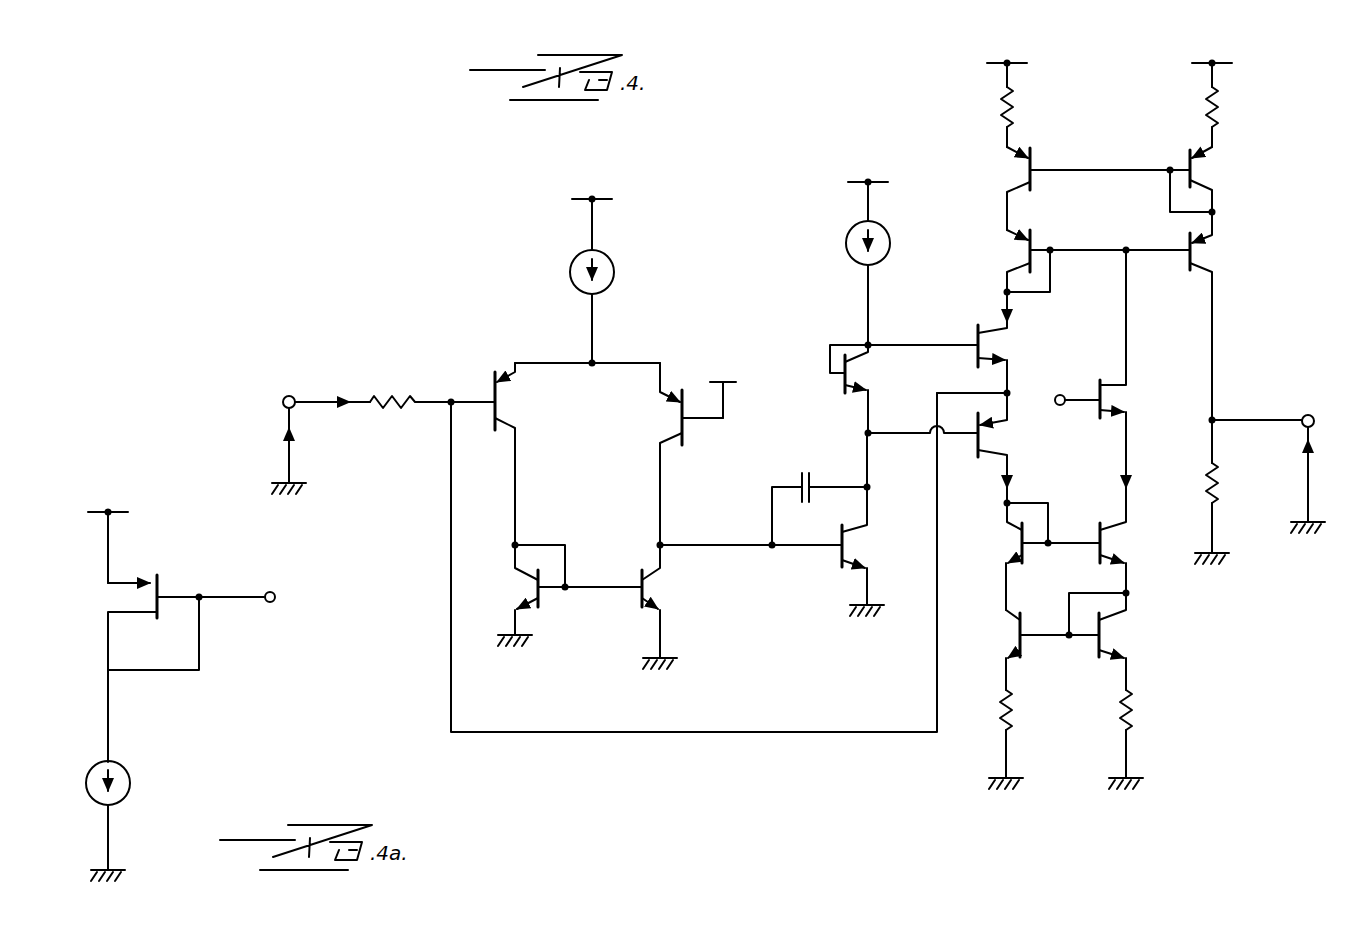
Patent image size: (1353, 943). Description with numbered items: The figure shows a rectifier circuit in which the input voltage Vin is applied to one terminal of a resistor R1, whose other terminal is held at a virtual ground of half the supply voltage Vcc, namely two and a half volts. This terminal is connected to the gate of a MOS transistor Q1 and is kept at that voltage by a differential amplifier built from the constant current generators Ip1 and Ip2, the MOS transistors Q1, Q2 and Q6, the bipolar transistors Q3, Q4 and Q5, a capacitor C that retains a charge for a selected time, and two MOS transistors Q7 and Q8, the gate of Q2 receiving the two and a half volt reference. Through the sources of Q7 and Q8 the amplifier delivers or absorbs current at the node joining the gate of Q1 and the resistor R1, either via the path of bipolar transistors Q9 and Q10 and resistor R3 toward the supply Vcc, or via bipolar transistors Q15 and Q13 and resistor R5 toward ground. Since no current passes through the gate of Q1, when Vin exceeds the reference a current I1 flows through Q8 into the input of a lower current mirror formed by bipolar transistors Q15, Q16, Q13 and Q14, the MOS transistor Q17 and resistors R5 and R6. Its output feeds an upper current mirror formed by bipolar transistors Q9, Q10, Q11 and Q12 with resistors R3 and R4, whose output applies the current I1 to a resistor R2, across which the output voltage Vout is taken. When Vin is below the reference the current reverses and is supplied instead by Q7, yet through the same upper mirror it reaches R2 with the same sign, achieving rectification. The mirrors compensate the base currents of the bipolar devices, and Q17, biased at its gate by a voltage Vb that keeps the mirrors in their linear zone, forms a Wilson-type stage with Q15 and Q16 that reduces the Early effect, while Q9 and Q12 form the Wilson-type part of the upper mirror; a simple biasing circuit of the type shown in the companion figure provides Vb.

In FIG. 4, the resistor R1 is at (385, 395).
In FIG. 4, the resistor R2 is at (1206, 475).
In FIG. 4, the resistor R3 is at (1002, 110).
In FIG. 4, the resistor R4 is at (1218, 112).
In FIG. 4, the resistor R5 is at (1010, 700).
In FIG. 4, the resistor R6 is at (1128, 705).
In FIG. 4, the transistor Q1 is at (493, 390).
In FIG. 4, the transistor Q2 is at (684, 395).
In FIG. 4, the transistor Q3 is at (528, 587).
In FIG. 4, the transistor Q4 is at (640, 600).
In FIG. 4, the transistor Q5 is at (838, 550).
In FIG. 4, the transistor Q6 is at (845, 380).
In FIG. 4, the transistor Q7 is at (976, 340).
In FIG. 4, the transistor Q8 is at (988, 437).
In FIG. 4, the transistor Q9 is at (1022, 250).
In FIG. 4, the transistor Q10 is at (1032, 165).
In FIG. 4, the transistor Q11 is at (1196, 170).
In FIG. 4, the transistor Q12 is at (1196, 255).
In FIG. 4, the transistor Q13 is at (1012, 630).
In FIG. 4, the transistor Q14 is at (1106, 632).
In FIG. 4, the transistor Q15 is at (1012, 598).
In FIG. 4, the transistor Q16 is at (1108, 555).
In FIG. 4, the transistor Q17 is at (1106, 398).
In FIG. 4, the capacitor C is at (800, 478).
In FIG. 4, the constant current generator Ip1 is at (575, 258).
In FIG. 4, the constant current generator Ip2 is at (846, 245).
In FIG. 4, the current I1 is at (1002, 465).
In FIG. 4, the supply voltage Vcc is at (902, 144).
In FIG. 4a, the supply voltage Vcc is at (108, 531).
In FIG. 4, the input voltage Vin is at (310, 457).
In FIG. 4, the output voltage Vout is at (1300, 474).
In FIG. 4, the gate voltage Vb is at (1078, 396).
In FIG. 4a, the gate voltage Vb is at (270, 603).